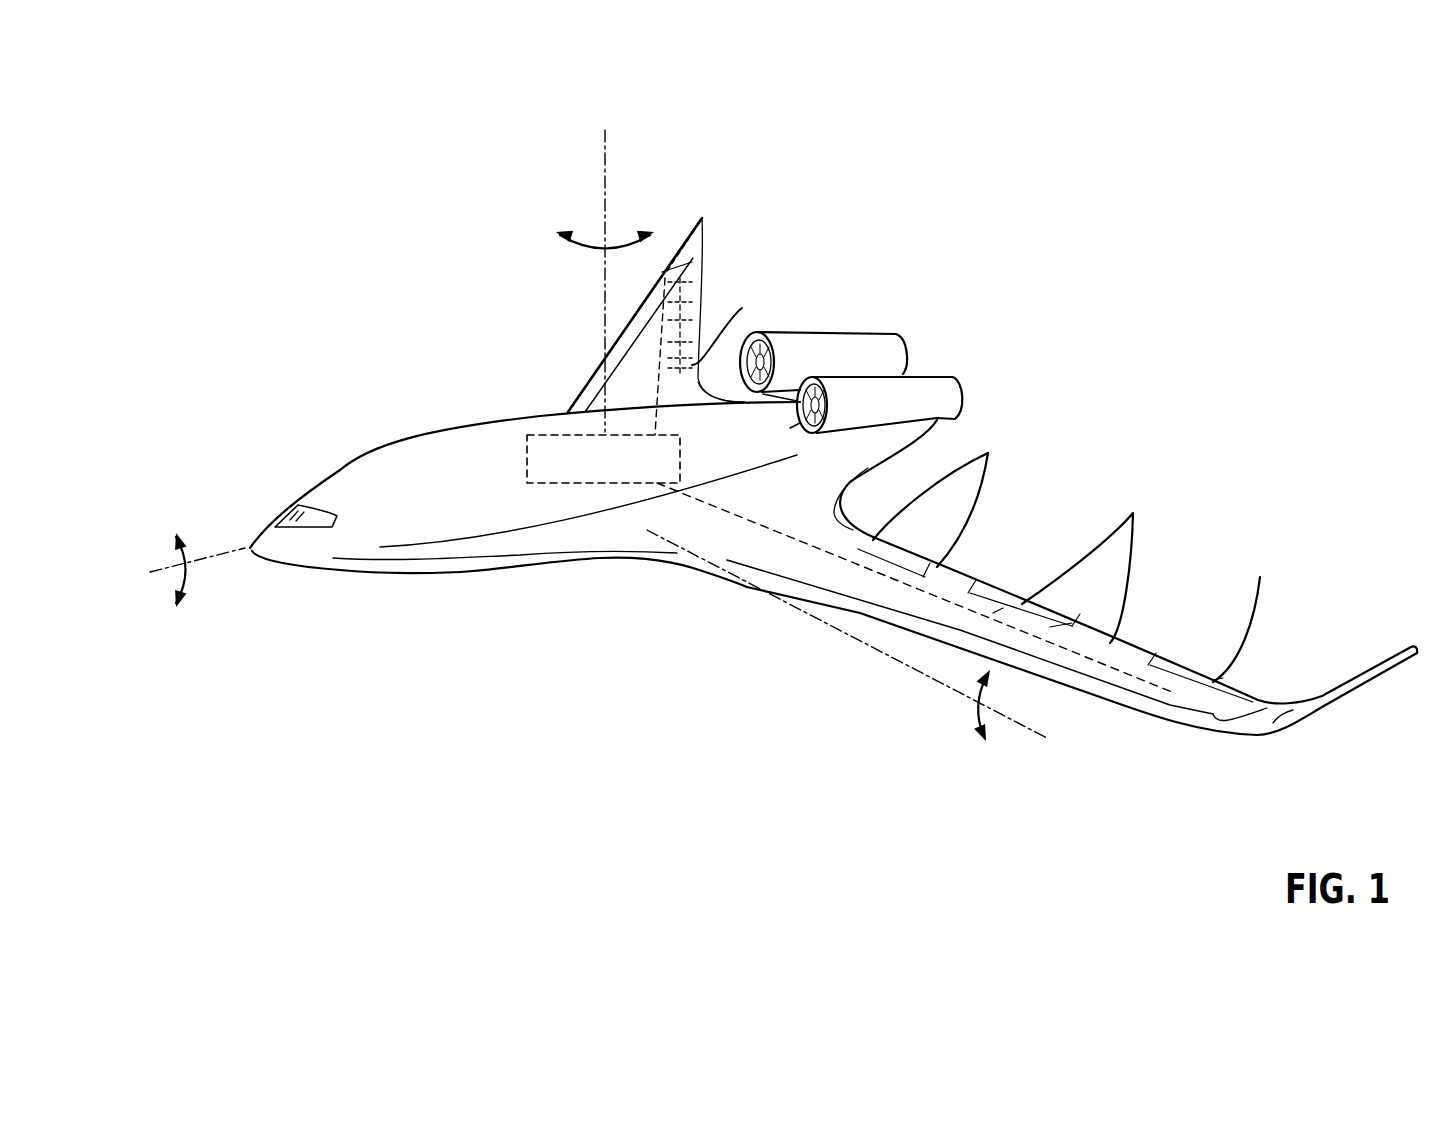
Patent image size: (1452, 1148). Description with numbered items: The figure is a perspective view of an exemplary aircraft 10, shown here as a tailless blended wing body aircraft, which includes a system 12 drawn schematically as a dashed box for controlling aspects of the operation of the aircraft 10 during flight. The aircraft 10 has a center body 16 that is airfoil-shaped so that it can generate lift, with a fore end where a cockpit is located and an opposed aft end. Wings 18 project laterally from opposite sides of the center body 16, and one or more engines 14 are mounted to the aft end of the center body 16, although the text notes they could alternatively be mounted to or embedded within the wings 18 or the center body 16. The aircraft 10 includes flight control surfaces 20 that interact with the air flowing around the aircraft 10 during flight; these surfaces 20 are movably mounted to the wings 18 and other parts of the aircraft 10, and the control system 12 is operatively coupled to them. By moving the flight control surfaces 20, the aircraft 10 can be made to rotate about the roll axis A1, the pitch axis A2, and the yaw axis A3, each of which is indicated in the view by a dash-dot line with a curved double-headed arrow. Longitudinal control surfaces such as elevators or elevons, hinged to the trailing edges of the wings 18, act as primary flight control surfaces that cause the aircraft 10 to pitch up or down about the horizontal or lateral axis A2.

The aircraft 10 is at (410, 196).
The system 12 is at (669, 479).
The engines 14 is at (870, 347).
The center body 16 is at (507, 430).
The wings 18 is at (635, 348).
The flight control surfaces 20 is at (692, 282).
The roll axis A1 is at (203, 563).
The pitch axis A2 is at (927, 672).
The yaw axis A3 is at (603, 175).